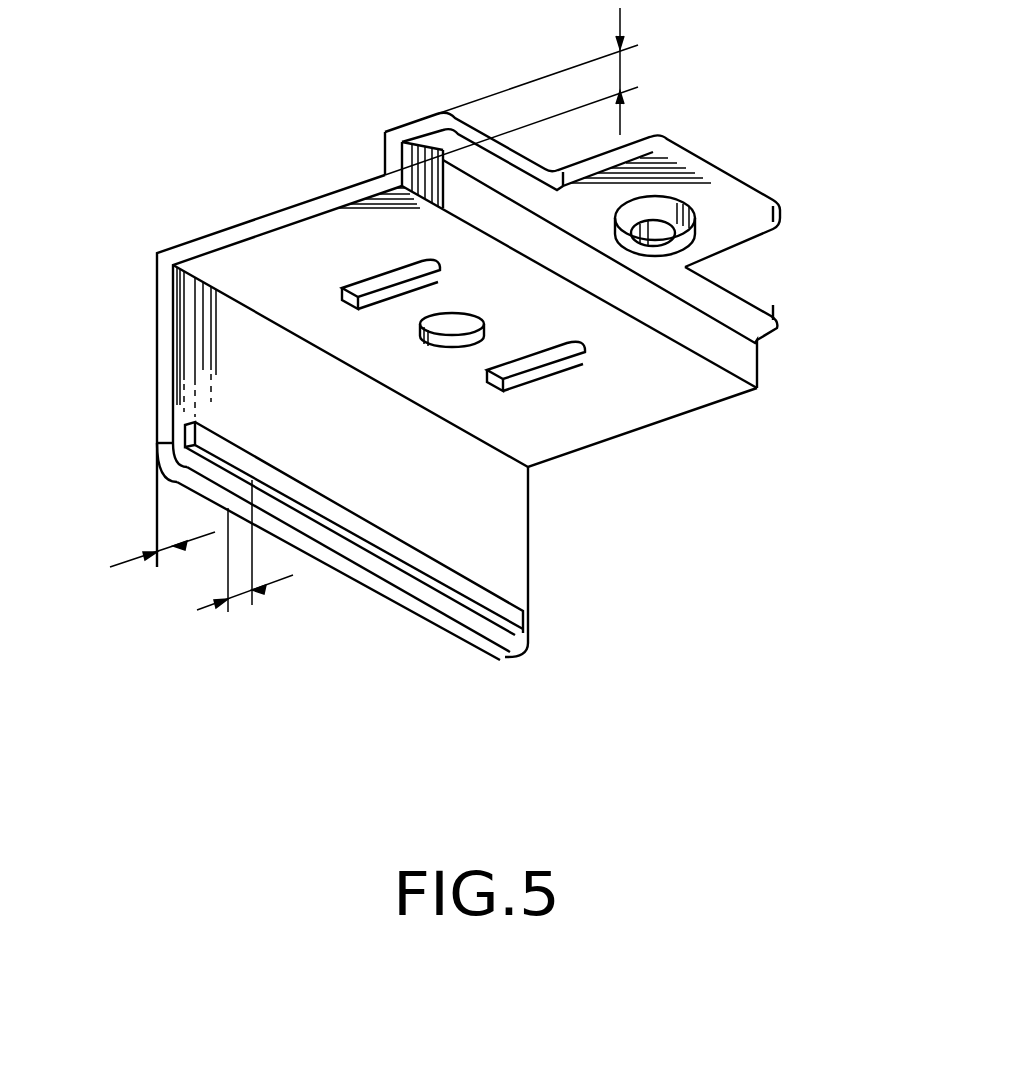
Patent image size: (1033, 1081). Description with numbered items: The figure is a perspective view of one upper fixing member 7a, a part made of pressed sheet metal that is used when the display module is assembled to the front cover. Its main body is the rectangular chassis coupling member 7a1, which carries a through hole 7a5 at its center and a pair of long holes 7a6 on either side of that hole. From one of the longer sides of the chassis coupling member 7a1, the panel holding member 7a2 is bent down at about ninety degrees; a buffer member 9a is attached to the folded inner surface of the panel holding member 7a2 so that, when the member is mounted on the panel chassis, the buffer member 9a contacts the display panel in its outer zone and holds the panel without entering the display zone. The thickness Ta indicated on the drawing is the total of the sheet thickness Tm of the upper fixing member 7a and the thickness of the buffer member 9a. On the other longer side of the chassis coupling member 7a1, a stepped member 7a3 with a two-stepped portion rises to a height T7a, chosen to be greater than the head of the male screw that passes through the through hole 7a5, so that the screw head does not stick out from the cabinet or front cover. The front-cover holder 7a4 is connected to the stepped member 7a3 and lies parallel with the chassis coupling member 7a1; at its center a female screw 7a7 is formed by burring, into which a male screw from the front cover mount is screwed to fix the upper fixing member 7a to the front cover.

The upper fixing member 7a is at (755, 293).
The chassis coupling member 7a1 is at (263, 257).
The panel holding member 7a2 is at (201, 343).
The stepped member 7a3 is at (742, 360).
The front-cover holder 7a4 is at (757, 236).
The through hole 7a5 is at (455, 340).
The long holes 7a6 is at (390, 300).
The female screw 7a7 is at (683, 233).
The buffer member 9a is at (417, 565).
The height of the stepped member T7a is at (541, 91).
The thickness of the upper fixing member Tm is at (148, 545).
The thickness Ta is at (245, 567).